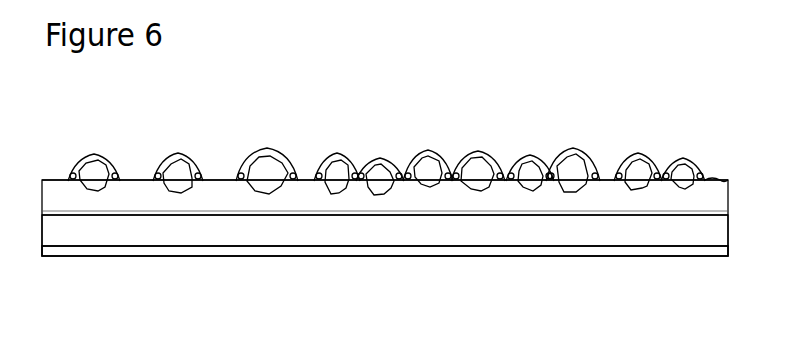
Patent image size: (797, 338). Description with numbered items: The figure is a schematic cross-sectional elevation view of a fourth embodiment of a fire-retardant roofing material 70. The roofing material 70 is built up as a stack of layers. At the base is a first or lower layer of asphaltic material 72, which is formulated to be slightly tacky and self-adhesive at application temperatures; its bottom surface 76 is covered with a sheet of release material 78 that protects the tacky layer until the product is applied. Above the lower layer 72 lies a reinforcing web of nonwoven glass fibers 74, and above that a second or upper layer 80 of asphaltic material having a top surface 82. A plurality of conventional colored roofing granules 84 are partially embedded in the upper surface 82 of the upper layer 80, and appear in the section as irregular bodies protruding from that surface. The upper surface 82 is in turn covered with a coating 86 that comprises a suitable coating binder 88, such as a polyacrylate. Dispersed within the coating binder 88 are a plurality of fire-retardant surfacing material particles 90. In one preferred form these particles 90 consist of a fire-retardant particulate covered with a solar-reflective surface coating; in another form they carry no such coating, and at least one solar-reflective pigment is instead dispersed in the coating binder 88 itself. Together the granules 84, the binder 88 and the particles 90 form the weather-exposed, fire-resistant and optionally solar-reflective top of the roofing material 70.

The fire-retardant roofing material 70 is at (572, 109).
The lower layer of asphaltic material 72 is at (308, 229).
The reinforcing web of nonwoven glass fibers 74 is at (420, 214).
The bottom surface 76 is at (510, 249).
The sheet of release material 78 is at (653, 249).
The upper layer of asphaltic material 80 is at (130, 195).
The top surface 82 is at (317, 177).
The colored roofing granules 84 is at (263, 172).
The coating 86 is at (462, 172).
The coating binder 88 is at (405, 175).
The fire-retardant surfacing material particles 90 is at (542, 177).